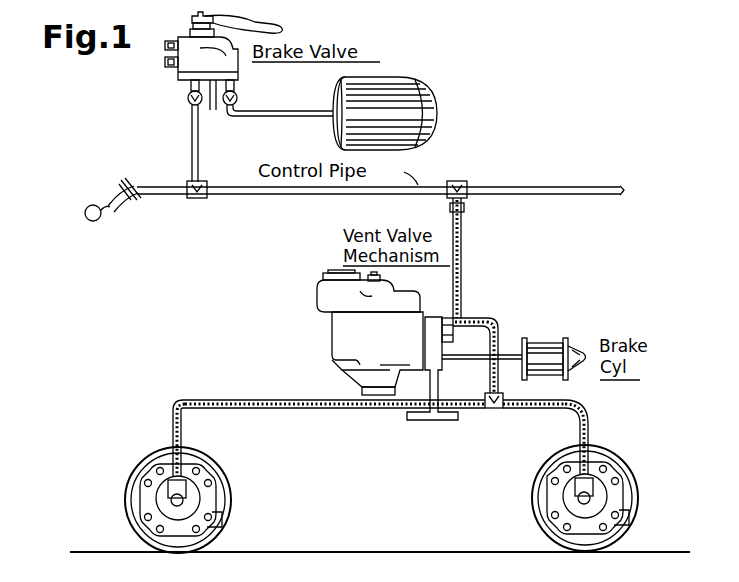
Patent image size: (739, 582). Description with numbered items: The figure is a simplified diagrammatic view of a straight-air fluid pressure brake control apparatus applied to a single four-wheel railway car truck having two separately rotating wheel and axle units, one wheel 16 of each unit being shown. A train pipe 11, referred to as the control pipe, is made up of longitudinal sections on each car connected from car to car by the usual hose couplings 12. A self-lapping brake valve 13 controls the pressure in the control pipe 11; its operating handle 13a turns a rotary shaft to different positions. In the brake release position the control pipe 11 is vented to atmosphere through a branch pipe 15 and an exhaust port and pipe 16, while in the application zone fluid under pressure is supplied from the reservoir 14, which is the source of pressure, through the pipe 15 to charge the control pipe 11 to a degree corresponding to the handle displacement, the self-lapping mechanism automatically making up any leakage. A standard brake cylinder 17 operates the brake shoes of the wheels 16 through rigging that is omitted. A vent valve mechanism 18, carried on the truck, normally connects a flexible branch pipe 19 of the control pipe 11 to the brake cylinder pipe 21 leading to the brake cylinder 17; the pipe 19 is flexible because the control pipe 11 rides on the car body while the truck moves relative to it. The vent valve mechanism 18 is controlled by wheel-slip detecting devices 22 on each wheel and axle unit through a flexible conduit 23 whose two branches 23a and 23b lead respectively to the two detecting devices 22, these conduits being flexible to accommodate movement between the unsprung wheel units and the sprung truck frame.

The train pipe (control pipe) 11 is at (514, 186).
The hose couplings 12 is at (112, 216).
The brake valve 13 is at (250, 72).
The operating handle 13a is at (283, 28).
The reservoir 14 is at (388, 74).
The branch pipe 15 is at (192, 133).
The exhaust pipe / wheel 16 is at (213, 110).
The brake cylinder 17 is at (549, 342).
The vent valve mechanism 18 is at (311, 299).
The branch conduit or pipe 19 is at (462, 242).
The brake cylinder pipe 21 is at (452, 360).
The wheel-slip detecting devices 22 is at (197, 479).
The flexible pipe or conduit 23 is at (476, 318).
The branch 23a is at (176, 411).
The branch 23b is at (588, 418).